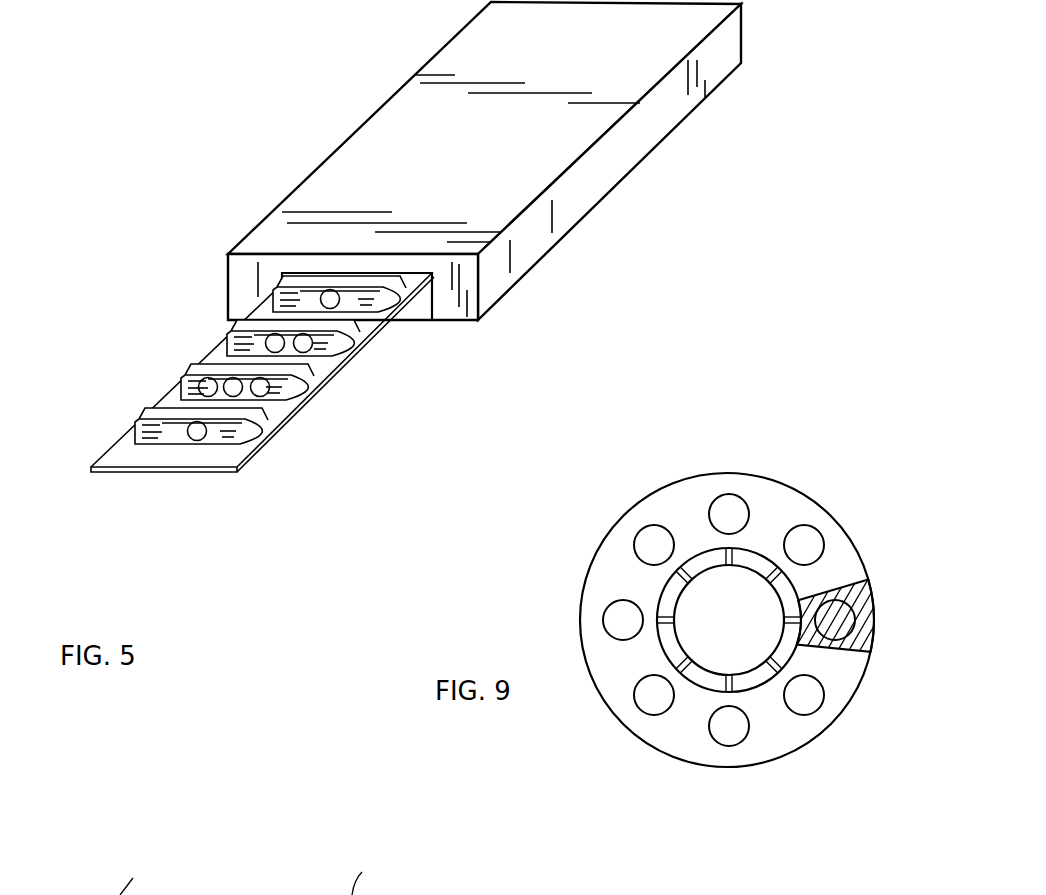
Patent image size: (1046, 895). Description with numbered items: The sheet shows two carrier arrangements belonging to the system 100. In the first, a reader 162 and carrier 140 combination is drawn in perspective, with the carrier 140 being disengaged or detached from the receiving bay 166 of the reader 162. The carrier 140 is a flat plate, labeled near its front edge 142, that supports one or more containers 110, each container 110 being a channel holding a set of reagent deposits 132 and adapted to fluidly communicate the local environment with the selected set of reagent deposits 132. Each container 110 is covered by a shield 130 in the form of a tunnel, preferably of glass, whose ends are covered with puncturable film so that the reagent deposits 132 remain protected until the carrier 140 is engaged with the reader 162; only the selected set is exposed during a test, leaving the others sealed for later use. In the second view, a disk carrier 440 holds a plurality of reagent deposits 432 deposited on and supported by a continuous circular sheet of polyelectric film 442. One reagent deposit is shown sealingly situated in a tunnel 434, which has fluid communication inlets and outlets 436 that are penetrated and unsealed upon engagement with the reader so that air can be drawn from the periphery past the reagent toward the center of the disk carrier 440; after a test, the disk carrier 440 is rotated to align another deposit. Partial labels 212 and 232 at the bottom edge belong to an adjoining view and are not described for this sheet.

In FIG. 5, the system 100 is at (312, 88).
In FIG. 5, the container 110 is at (233, 333).
In FIG. 5, the shield 130 is at (234, 330).
In FIG. 5, the reagent deposit 132 is at (196, 432).
In FIG. 5, the carrier 140 is at (350, 385).
In FIG. 5, the tray edge 142 is at (227, 473).
In FIG. 5, the reader 162 is at (608, 160).
In FIG. 5, the receiving bay 166 is at (430, 307).
In FIG. 5, the element 212 is at (150, 884).
In FIG. 5, the element 232 is at (377, 880).
In FIG. 9, the reagent deposit 432 is at (815, 693).
In FIG. 9, the tunnel 434 is at (872, 632).
In FIG. 9, the outlet 436 is at (800, 616).
In FIG. 9, the disk carrier 440 is at (758, 450).
In FIG. 9, the polyelectric film 442 is at (617, 550).